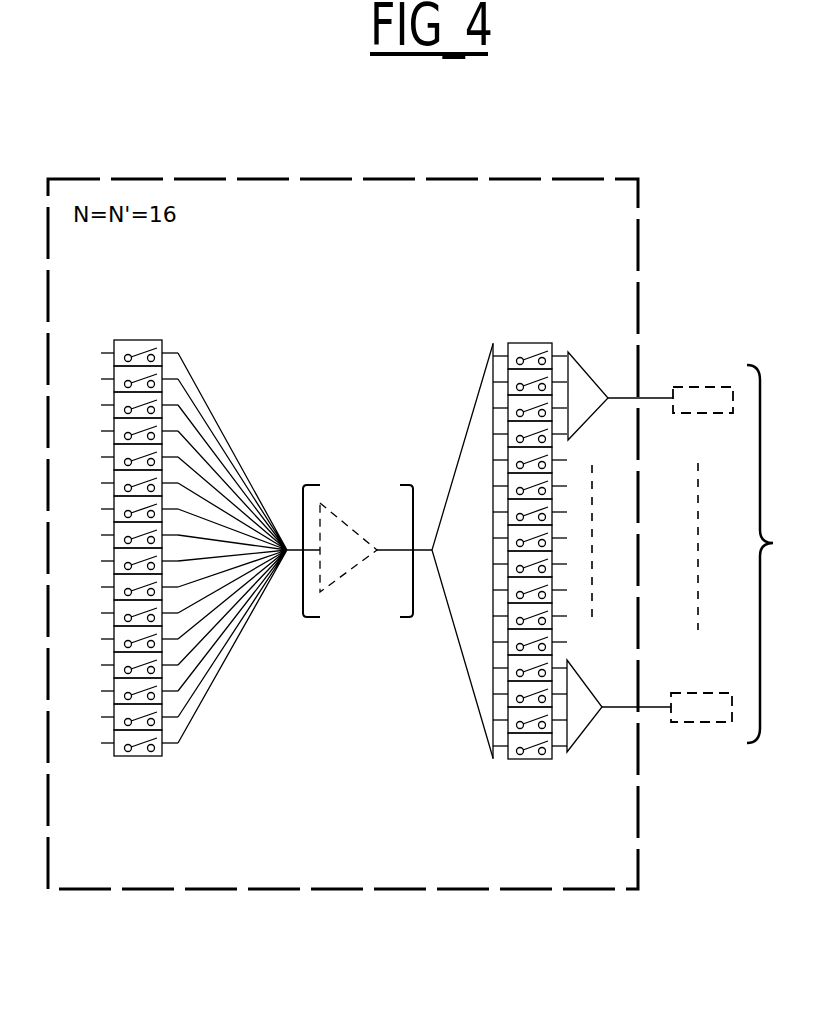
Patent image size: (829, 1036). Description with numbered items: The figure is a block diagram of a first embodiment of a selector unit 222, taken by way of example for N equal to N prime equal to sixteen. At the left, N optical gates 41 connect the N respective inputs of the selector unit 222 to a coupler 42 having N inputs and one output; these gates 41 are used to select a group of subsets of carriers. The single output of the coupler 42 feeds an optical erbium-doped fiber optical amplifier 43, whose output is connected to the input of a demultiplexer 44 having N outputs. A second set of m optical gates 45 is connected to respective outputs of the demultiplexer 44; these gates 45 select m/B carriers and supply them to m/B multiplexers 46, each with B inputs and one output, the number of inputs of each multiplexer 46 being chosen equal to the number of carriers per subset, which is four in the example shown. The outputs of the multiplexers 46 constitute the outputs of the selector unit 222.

The selector unit 222 is at (588, 181).
The optical gates 41 is at (143, 340).
The coupler 42 is at (287, 548).
The erbium-doped fiber optical amplifier 43 is at (342, 517).
The demultiplexer 44 is at (466, 418).
The optical gates 45 is at (512, 808).
The multiplexers 46 is at (611, 828).